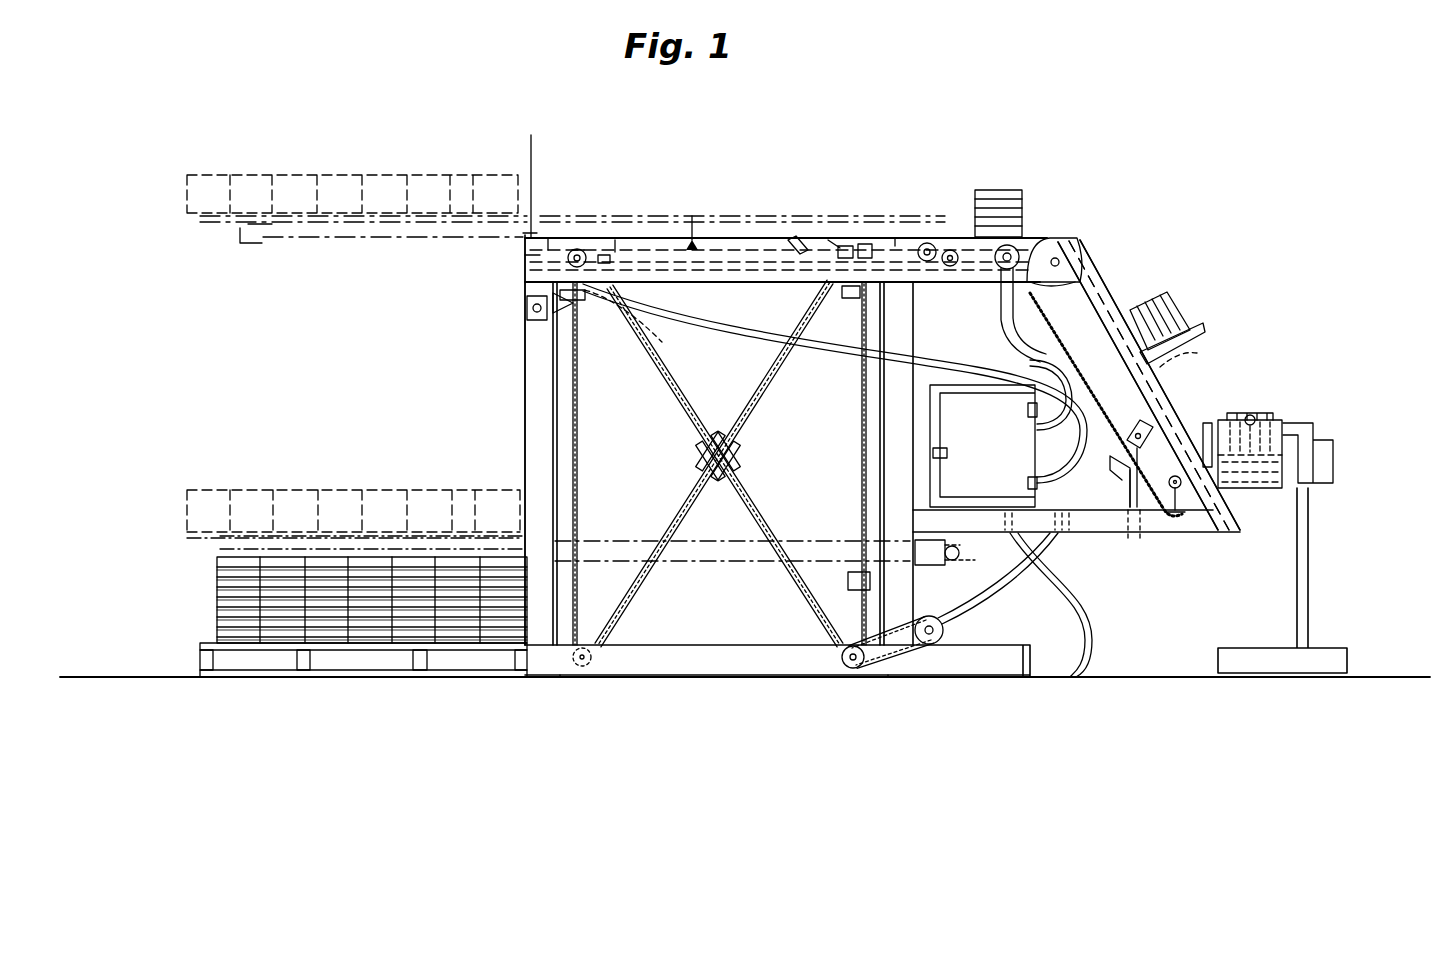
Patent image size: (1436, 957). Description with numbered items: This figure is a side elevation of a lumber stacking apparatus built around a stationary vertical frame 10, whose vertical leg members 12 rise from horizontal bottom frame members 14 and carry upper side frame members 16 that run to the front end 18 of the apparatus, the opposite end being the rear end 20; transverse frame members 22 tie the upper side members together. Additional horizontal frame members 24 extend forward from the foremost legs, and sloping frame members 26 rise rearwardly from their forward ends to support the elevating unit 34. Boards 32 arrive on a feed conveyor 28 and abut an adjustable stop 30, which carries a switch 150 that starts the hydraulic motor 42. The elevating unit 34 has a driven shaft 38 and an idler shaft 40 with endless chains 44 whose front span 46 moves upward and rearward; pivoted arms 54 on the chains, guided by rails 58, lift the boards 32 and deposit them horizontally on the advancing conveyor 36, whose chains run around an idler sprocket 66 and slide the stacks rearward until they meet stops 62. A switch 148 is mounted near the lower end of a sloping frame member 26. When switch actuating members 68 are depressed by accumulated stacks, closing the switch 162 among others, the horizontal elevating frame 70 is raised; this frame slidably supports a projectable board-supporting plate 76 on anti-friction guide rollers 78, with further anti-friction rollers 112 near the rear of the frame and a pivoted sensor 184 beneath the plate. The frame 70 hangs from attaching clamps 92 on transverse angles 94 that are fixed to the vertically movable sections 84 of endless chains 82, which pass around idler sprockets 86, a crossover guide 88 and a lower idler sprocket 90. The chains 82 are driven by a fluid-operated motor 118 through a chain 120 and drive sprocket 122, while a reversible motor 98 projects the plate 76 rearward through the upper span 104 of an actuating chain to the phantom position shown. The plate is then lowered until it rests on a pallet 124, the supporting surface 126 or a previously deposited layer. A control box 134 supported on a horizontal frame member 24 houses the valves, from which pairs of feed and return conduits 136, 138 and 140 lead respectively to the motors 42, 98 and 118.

The stationary vertical frame 10 is at (667, 203).
The vertical leg members 12 is at (525, 420).
The horizontal bottom frame members 14 is at (700, 645).
The upper side frame member 16 is at (720, 288).
The front end 18 is at (1183, 409).
The rear end 20 is at (522, 390).
The transverse frame members 22 is at (560, 675).
The horizontal frame members 24 is at (1097, 535).
The sloping frame members 26 is at (1112, 297).
The feed conveyor 28 is at (1240, 493).
The adjustable stop 30 is at (1284, 420).
The boards 32 is at (360, 175).
The elevating unit 34 is at (1100, 270).
The advancing conveyor 36 is at (876, 240).
The shaft 38 is at (1052, 238).
The shaft 40 is at (1177, 512).
The hydraulic motor 42 is at (1000, 272).
The endless chains 44 is at (1108, 458).
The front span 46 is at (1198, 355).
The pivoted arms 54 is at (1028, 316).
The rails 58 is at (1132, 389).
The stops 62 is at (531, 140).
The idler sprocket 66 is at (582, 250).
The switch actuating members 68 is at (795, 238).
The horizontal elevating frame 70 is at (690, 238).
The board-supporting plate 76 is at (265, 245).
The anti-friction guide rollers 78 is at (549, 238).
The endless chains 82 is at (697, 490).
The vertically movable section 84 is at (578, 432).
The idler sprockets 86 is at (578, 250).
The crossover guide 88 is at (726, 438).
The lower idler sprocket 90 is at (584, 648).
The attaching clamps 92 is at (556, 302).
The transverse angles 94 is at (580, 302).
The fluid-operated motor 98 is at (528, 290).
The upper span 104 is at (672, 348).
The anti-friction rollers 112 is at (525, 255).
The fluid-operated motor 118 is at (925, 662).
The chain 120 is at (915, 568).
The drive sprocket 122 is at (865, 669).
The pallet 124 is at (372, 652).
The supporting surface 126 is at (142, 677).
The control box 134 is at (1000, 446).
The feed and return conduits 136 is at (1054, 332).
The feed and return conduits 138 is at (825, 350).
The feed and return conduits 140 is at (1000, 600).
The switch 148 is at (1130, 452).
The switch 150 is at (1255, 414).
The switch 162 is at (606, 255).
The sensor 184 is at (350, 240).